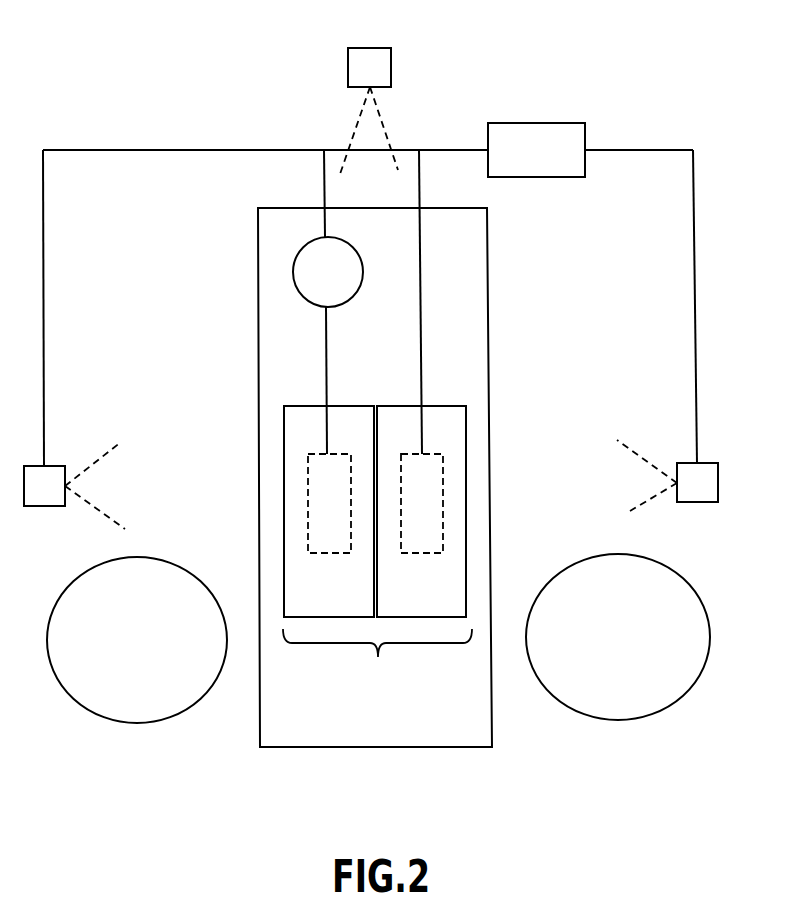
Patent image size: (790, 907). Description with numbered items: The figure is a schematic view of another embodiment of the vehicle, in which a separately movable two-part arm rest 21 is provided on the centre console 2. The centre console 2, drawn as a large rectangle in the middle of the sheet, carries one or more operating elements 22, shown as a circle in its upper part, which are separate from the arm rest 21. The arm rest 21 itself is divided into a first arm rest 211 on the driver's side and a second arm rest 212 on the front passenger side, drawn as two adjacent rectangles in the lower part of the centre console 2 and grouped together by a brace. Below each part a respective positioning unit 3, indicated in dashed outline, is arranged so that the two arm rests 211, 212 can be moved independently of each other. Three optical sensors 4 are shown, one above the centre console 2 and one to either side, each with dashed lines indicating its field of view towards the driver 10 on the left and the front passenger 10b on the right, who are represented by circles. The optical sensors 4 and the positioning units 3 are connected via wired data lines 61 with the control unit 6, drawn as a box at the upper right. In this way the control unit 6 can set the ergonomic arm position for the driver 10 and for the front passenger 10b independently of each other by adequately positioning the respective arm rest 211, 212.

The centre console 2 is at (258, 362).
The positioning unit 3 is at (375, 503).
The optical sensor 4 is at (371, 288).
The control unit 6 is at (536, 150).
The driver 10 is at (137, 640).
The front passenger 10b is at (618, 637).
The arm rest 21 is at (377, 664).
The operating element 22 is at (332, 272).
The wired data line 61 is at (118, 148).
The first arm rest 211 is at (310, 436).
The second arm rest 212 is at (434, 440).